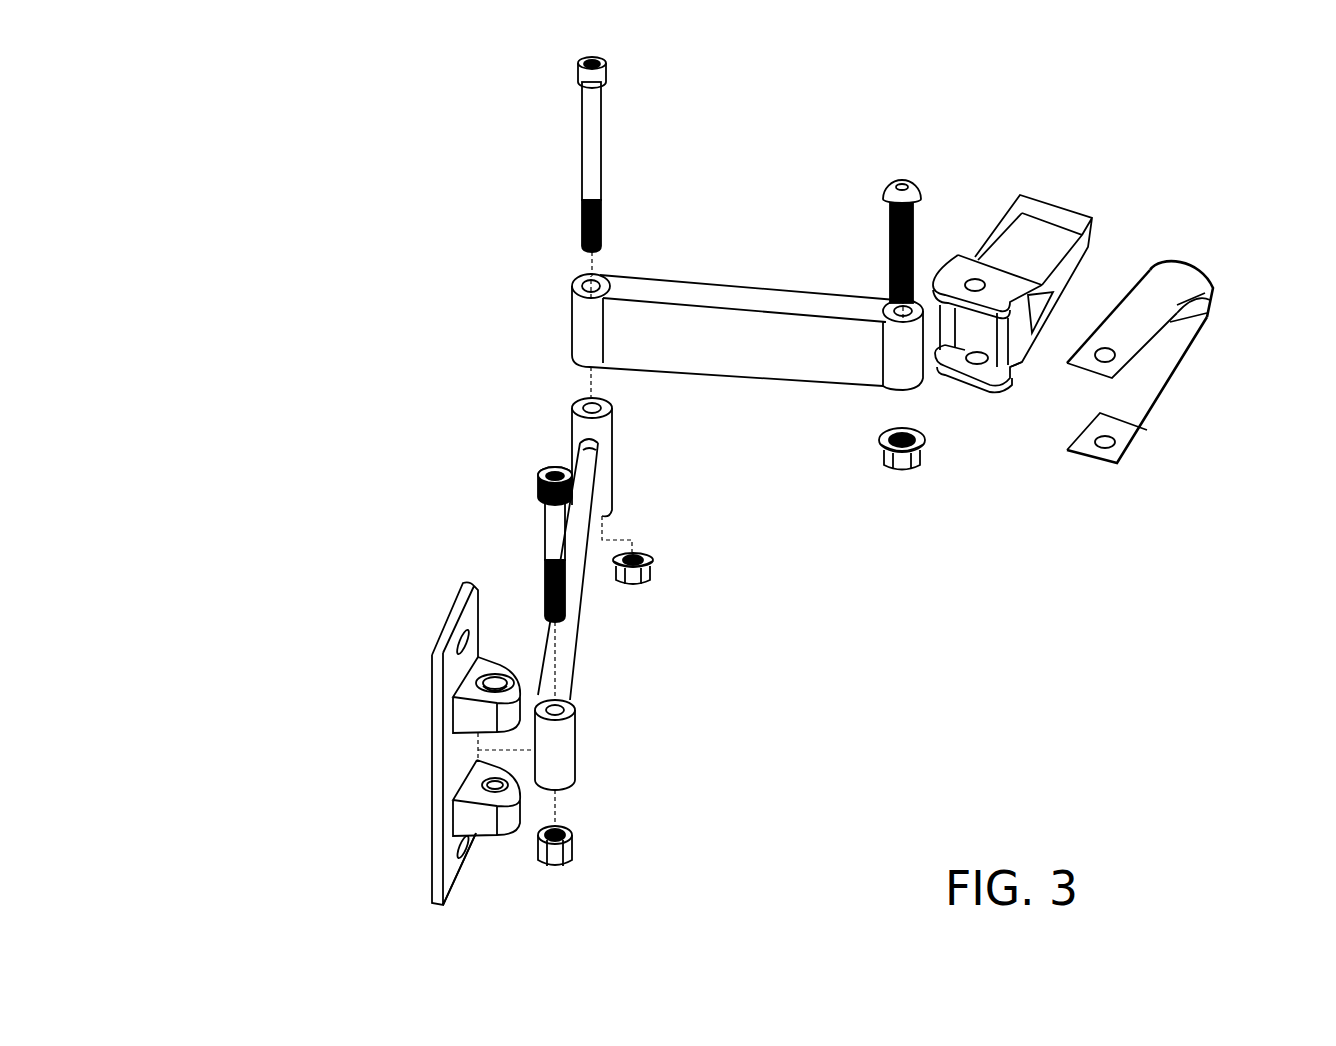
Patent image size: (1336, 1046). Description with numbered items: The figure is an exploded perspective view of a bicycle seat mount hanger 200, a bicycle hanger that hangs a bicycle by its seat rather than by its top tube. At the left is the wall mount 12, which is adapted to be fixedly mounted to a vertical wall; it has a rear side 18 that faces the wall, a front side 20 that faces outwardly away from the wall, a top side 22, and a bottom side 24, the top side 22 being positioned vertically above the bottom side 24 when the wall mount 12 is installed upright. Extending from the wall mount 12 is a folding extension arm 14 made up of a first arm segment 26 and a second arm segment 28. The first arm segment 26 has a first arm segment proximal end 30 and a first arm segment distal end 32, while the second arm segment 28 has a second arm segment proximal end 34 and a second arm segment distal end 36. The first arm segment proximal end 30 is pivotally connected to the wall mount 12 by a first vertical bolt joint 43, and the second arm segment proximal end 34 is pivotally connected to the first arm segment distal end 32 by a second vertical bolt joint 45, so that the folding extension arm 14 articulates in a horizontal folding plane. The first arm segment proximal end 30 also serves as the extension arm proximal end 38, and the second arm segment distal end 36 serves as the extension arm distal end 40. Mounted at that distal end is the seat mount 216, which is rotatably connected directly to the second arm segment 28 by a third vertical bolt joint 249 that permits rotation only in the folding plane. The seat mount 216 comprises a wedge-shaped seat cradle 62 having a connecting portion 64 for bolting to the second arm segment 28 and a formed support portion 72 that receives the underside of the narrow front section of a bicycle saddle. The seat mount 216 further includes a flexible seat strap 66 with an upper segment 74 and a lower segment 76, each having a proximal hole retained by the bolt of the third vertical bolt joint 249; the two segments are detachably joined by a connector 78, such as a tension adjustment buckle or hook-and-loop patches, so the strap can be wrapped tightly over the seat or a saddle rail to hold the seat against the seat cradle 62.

The bicycle seat mount hanger 200 is at (312, 258).
The wall mount 12 is at (407, 644).
The folding extension arm 14 is at (537, 259).
The rear side 18 is at (428, 897).
The front side 20 is at (470, 768).
The top side 22 is at (462, 580).
The bottom side 24 is at (450, 889).
The first arm segment 26 is at (600, 610).
The second arm segment 28 is at (643, 275).
The first arm segment proximal end 30 is at (656, 772).
The extension arm proximal end 38 is at (565, 758).
The first arm segment distal end 32 is at (614, 416).
The second arm segment proximal end 34 is at (571, 323).
The second arm segment distal end 36 is at (949, 427).
The extension arm distal end 40 is at (925, 385).
The first vertical bolt joint 43 is at (555, 455).
The second vertical bolt joint 45 is at (610, 110).
The third vertical bolt joint 249 is at (902, 170).
The seat cradle 62 is at (1095, 258).
The connecting portion 64 is at (975, 278).
The support portion 72 is at (1047, 228).
The seat strap 66 is at (1200, 350).
The upper segment 74 is at (1130, 322).
The lower segment 76 is at (1168, 370).
The connector 78 is at (1200, 270).
The seat mount 216 is at (1043, 458).